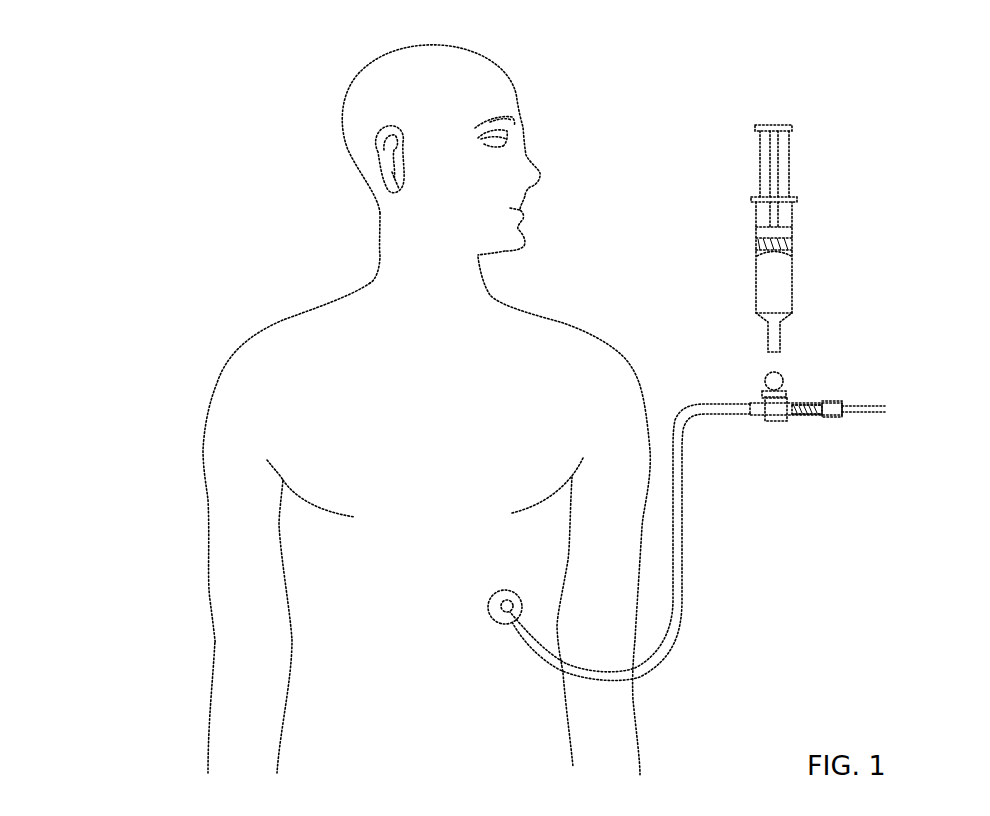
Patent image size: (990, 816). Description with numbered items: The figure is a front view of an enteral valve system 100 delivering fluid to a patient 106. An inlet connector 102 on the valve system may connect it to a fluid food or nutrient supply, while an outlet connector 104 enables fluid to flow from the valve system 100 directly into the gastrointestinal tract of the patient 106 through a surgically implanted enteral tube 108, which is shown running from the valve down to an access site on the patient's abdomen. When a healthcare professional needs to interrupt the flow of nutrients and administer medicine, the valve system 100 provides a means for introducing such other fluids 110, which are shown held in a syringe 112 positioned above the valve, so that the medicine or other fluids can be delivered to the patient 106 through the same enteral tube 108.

The enteral valve system 100 is at (818, 377).
The inlet connector 102 is at (786, 418).
The outlet connector 104 is at (756, 403).
The patient 106 is at (290, 252).
The enteral tube 108 is at (683, 525).
The other fluids 110 is at (757, 283).
The syringe 112 is at (823, 233).